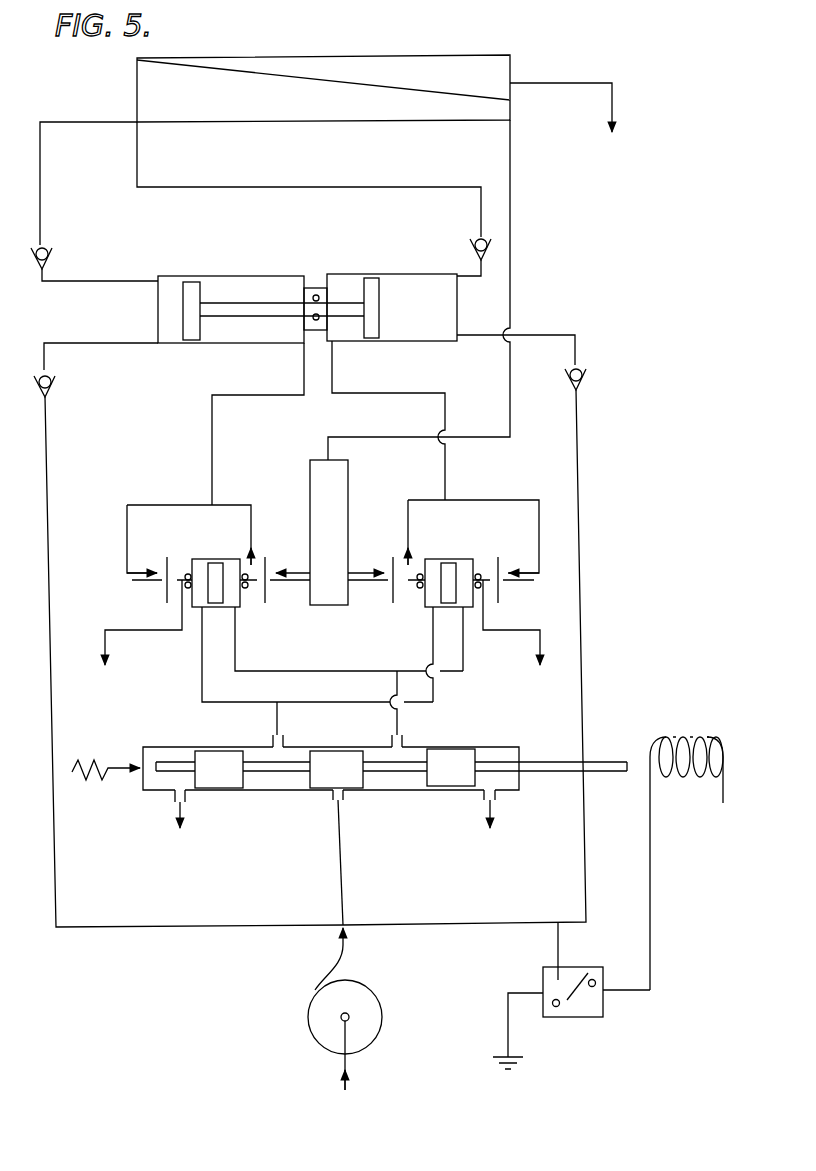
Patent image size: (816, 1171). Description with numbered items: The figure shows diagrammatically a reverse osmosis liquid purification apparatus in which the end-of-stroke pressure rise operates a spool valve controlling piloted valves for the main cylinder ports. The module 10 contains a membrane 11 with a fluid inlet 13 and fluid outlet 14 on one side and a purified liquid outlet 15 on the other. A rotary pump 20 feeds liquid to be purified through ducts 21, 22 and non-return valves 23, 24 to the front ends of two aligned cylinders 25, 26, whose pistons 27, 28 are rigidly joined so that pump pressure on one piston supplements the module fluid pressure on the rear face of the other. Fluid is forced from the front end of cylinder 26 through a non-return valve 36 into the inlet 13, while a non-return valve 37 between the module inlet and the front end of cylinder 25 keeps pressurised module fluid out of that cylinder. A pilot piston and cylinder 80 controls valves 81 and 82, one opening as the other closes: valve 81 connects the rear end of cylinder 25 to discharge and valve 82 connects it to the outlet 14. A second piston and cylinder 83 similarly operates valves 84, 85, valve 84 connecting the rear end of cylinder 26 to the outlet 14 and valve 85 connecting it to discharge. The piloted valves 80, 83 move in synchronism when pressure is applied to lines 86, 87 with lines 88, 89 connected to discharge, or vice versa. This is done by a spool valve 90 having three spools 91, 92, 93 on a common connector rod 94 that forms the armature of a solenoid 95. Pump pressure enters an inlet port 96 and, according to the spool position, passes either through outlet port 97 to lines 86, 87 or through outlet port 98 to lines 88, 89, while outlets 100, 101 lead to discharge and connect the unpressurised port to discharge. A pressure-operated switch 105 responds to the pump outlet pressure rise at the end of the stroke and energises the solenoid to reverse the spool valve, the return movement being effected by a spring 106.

The reverse osmosis liquid purification module 10 is at (275, 49).
The membrane 11 is at (322, 76).
The fluid inlet 13 is at (92, 120).
The fluid outlet 14 is at (512, 124).
The purified liquid outlet 15 is at (556, 82).
The rotary pump 20 is at (307, 1020).
The duct 21 is at (137, 929).
The duct 22 is at (412, 925).
The non-return valve 23 is at (52, 385).
The non-return valve 24 is at (583, 378).
The cylinder 25 is at (225, 276).
The cylinder 26 is at (408, 275).
The piston 27 is at (190, 284).
The piston 28 is at (371, 280).
The non-return valve 36 is at (477, 240).
The non-return valve 37 is at (50, 256).
The pilot piston and cylinder 80 is at (207, 555).
The valve 81 is at (162, 590).
The valve 82 is at (272, 592).
The piston and cylinder 83 is at (457, 555).
The valve 84 is at (388, 590).
The valve 85 is at (505, 592).
The line 86 is at (201, 650).
The line 87 is at (432, 648).
The line 88 is at (236, 650).
The line 89 is at (464, 648).
The spool valve 90 is at (440, 740).
The spool 91 is at (221, 780).
The spool 92 is at (322, 790).
The spool 93 is at (440, 778).
The common connector rod 94 is at (502, 760).
The solenoid 95 is at (681, 724).
The inlet port 96 is at (340, 797).
The outlet port 97 is at (275, 740).
The outlet port 98 is at (395, 740).
The outlet 100 is at (174, 803).
The outlet 101 is at (497, 793).
The pressure-operated switch 105 is at (578, 1019).
The spring 106 is at (90, 780).